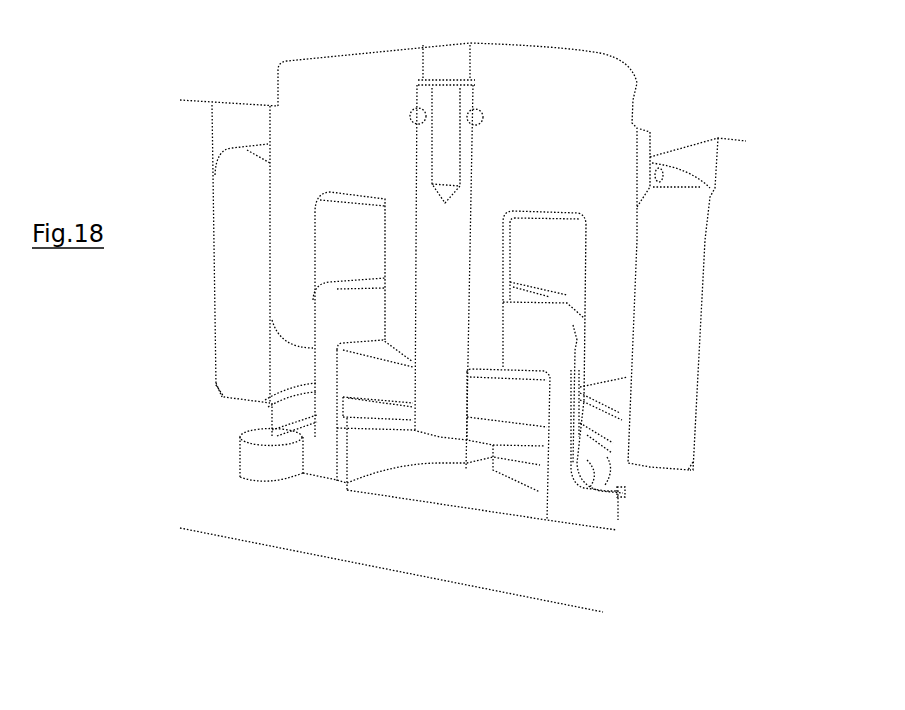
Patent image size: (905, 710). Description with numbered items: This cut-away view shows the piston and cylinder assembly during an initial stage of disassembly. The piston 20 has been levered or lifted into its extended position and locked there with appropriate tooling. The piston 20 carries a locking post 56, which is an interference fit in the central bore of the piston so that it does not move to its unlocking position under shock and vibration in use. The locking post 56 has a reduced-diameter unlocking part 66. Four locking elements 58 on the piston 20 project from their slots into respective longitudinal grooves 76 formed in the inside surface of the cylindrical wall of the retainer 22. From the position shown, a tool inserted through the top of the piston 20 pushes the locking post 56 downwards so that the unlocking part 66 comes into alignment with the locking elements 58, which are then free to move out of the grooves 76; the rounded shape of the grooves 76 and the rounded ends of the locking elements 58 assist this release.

The piston 20 is at (308, 58).
The locking post 56 is at (453, 243).
The unlocking part 66 is at (458, 322).
The retainer 22 is at (327, 380).
The locking elements 58 is at (528, 403).
The longitudinal grooves 76 is at (487, 457).